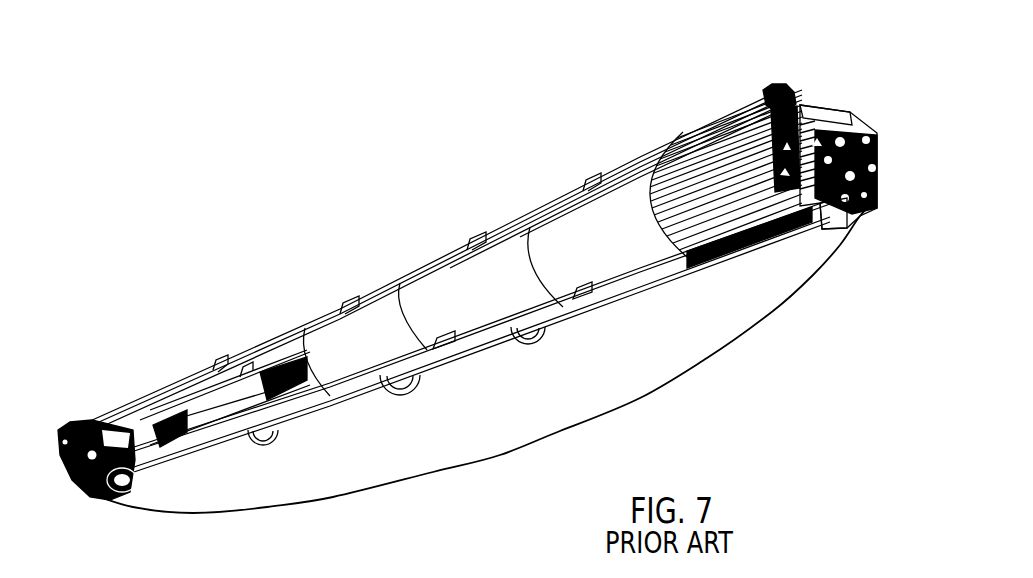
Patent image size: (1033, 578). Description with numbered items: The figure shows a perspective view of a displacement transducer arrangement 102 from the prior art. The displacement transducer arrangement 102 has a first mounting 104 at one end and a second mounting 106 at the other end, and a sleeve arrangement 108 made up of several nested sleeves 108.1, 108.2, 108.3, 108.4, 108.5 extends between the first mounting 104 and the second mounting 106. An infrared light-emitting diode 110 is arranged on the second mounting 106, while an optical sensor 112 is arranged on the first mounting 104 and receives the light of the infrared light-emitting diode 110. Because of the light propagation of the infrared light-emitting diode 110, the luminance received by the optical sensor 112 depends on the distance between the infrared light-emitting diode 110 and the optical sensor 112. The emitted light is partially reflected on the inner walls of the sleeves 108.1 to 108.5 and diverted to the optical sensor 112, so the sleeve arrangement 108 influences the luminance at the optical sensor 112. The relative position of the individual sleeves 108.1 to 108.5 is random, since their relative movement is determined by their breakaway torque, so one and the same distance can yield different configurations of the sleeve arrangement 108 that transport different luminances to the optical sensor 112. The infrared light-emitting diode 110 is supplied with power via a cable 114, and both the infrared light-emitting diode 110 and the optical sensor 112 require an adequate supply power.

The displacement transducer arrangement 102 is at (191, 87).
The first mounting 104 is at (797, 97).
The second mounting 106 is at (65, 427).
The sleeve arrangement 108 is at (458, 150).
The sleeve 108.1 is at (687, 167).
The sleeve 108.2 is at (570, 233).
The sleeve 108.3 is at (435, 283).
The sleeve 108.4 is at (318, 338).
The sleeve 108.5 is at (152, 407).
The infrared light-emitting diode 110 is at (125, 457).
The optical sensor 112 is at (742, 107).
The cable 114 is at (588, 423).